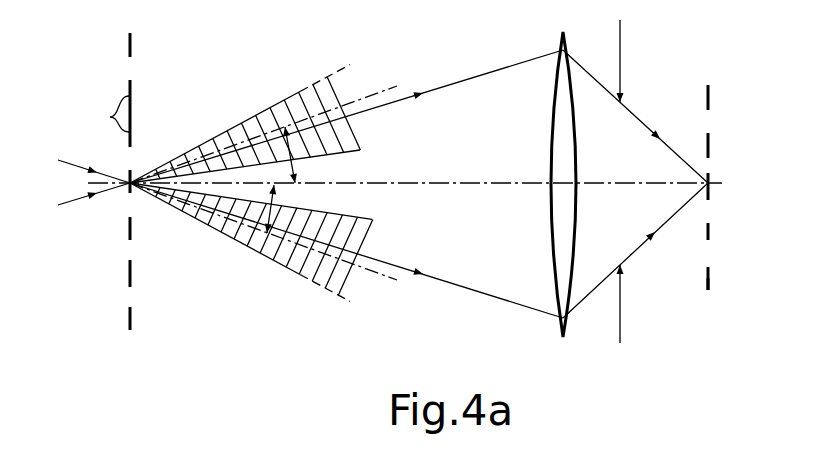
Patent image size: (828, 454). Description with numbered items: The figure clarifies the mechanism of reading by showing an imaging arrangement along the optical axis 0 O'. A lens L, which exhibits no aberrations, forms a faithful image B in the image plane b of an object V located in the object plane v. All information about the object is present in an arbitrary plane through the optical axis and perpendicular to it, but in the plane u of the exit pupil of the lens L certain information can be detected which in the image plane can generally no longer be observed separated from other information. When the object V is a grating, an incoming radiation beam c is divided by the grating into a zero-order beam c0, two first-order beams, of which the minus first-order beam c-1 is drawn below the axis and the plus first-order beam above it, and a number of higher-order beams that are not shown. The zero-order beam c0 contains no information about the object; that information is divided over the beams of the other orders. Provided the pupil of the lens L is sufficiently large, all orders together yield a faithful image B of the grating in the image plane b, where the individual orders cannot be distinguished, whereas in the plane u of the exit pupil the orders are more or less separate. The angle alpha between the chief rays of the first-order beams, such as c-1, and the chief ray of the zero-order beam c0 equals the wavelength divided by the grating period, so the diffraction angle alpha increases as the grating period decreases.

The object plane v is at (133, 289).
The object V is at (128, 178).
The optical axis 0 is at (397, 183).
The radiation beam c is at (68, 160).
The first-order beam c-1 is at (332, 268).
The zero-order beam c0 is at (377, 110).
The diffraction angle alpha is at (300, 162).
The lens L is at (557, 88).
The plane of the exit pupil u is at (629, 181).
The optical axis O' is at (654, 184).
The image B is at (712, 190).
The image plane b is at (712, 281).